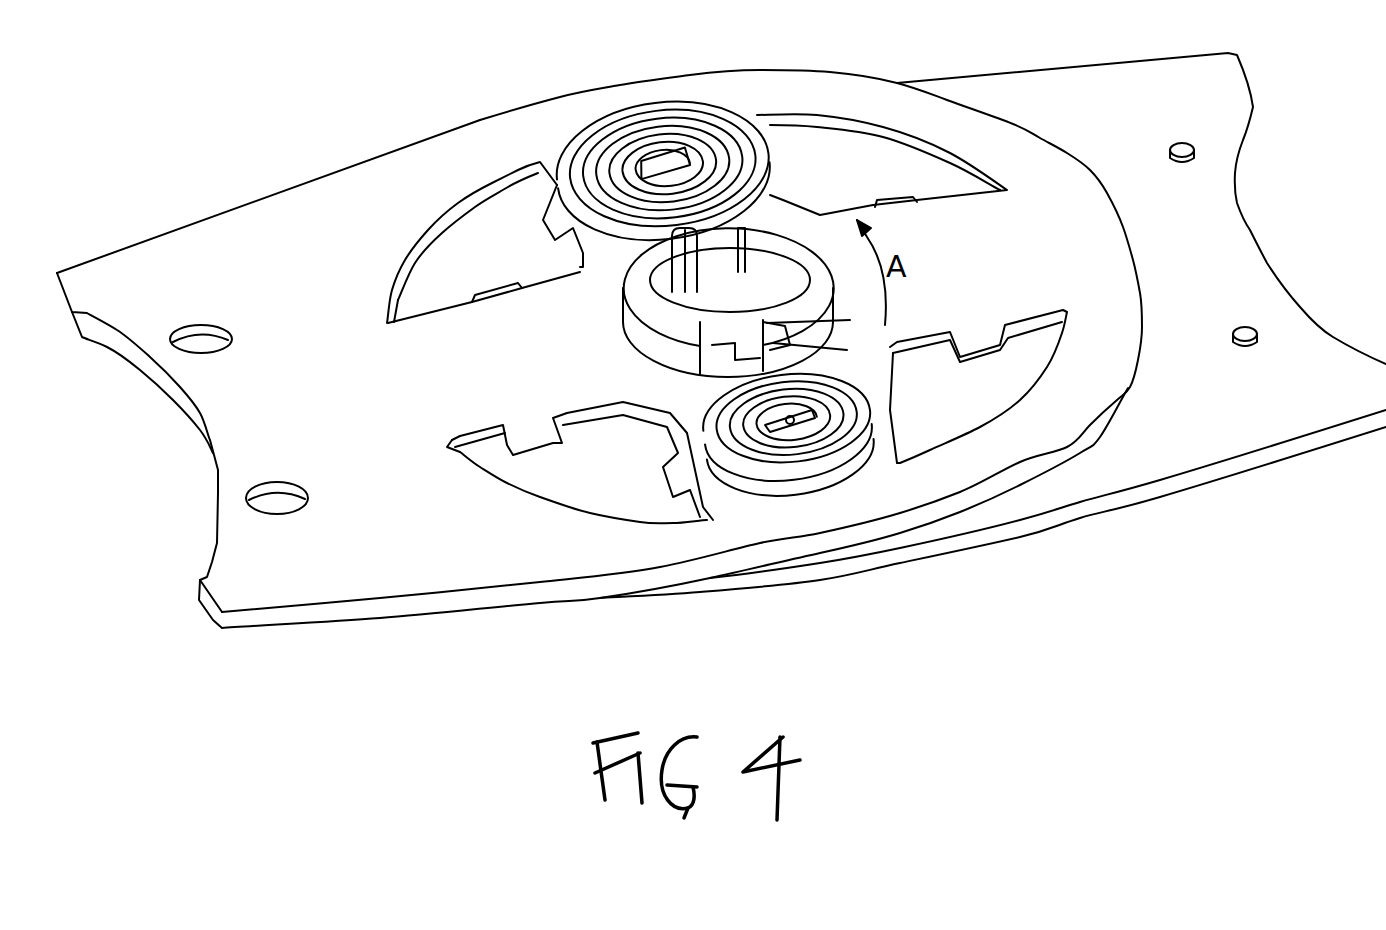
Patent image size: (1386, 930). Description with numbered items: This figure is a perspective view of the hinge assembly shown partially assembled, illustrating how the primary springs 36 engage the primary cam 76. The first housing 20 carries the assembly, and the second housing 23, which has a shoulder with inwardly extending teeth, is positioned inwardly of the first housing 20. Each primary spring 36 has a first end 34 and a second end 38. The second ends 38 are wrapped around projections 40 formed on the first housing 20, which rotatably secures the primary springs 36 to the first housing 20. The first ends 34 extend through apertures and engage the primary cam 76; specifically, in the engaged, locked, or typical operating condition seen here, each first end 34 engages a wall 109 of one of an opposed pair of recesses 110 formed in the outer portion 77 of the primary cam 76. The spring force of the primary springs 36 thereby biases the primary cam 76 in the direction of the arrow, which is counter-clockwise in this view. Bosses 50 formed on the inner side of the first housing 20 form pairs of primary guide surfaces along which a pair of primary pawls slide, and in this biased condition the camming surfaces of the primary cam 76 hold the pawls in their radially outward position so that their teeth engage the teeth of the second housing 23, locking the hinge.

The first housing 20 is at (317, 405).
The second housing 23 is at (1193, 130).
The first ends 34 is at (826, 333).
The primary springs 36 is at (700, 408).
The second ends 38 is at (773, 417).
The projections 40 is at (790, 423).
The bosses 50 is at (563, 477).
The primary cam 76 is at (623, 338).
The outer portion 77 is at (633, 298).
The wall 109 is at (583, 265).
The recesses 110 is at (762, 284).